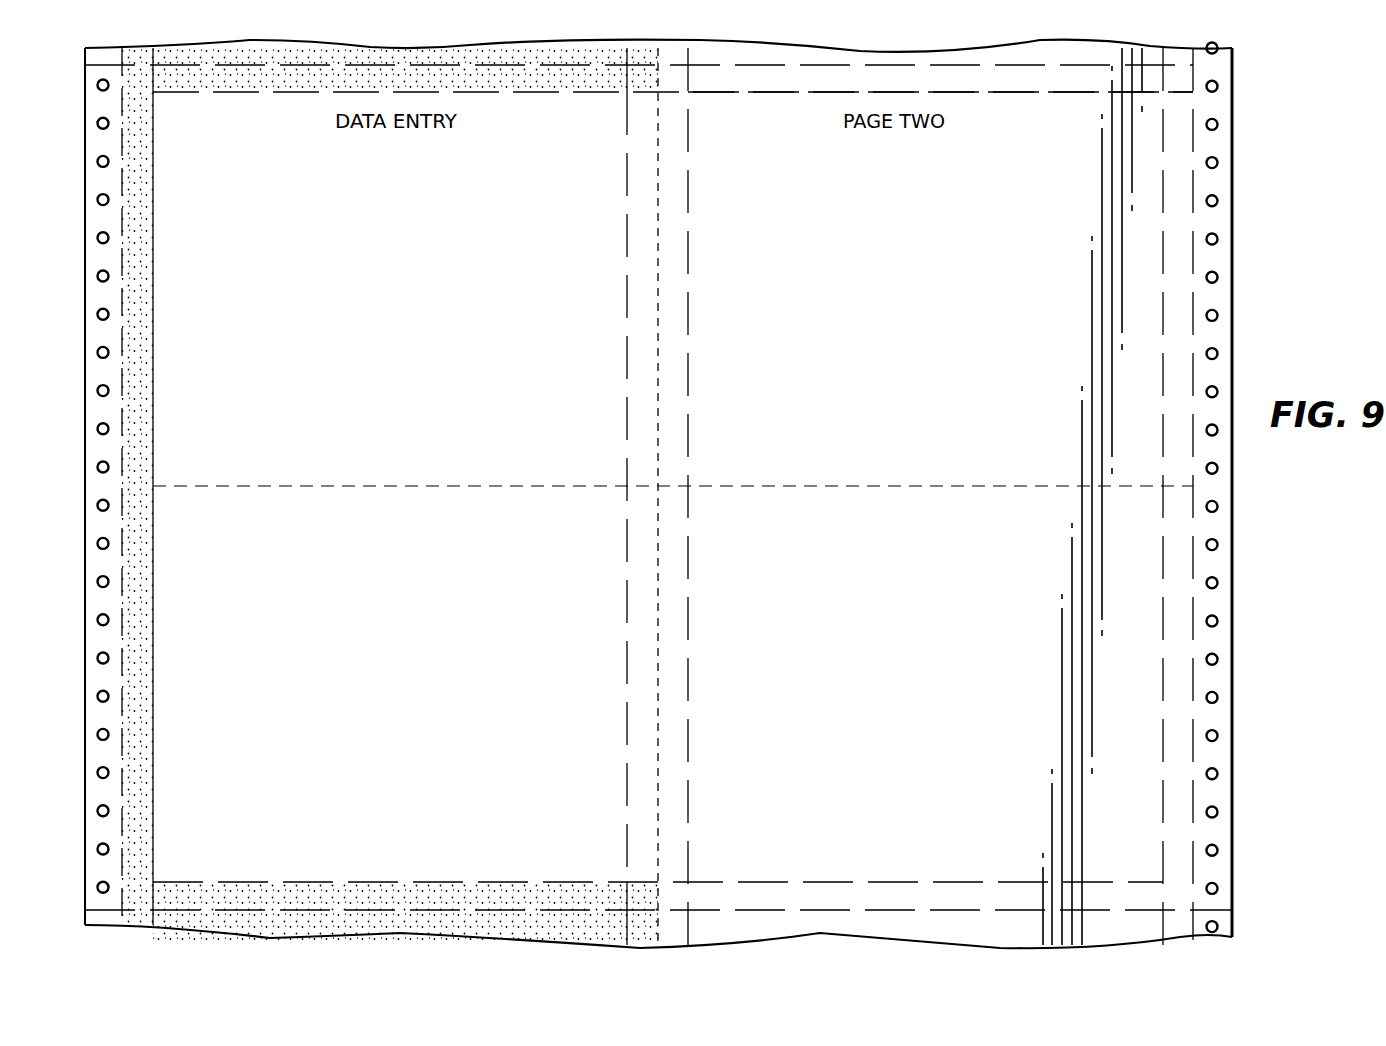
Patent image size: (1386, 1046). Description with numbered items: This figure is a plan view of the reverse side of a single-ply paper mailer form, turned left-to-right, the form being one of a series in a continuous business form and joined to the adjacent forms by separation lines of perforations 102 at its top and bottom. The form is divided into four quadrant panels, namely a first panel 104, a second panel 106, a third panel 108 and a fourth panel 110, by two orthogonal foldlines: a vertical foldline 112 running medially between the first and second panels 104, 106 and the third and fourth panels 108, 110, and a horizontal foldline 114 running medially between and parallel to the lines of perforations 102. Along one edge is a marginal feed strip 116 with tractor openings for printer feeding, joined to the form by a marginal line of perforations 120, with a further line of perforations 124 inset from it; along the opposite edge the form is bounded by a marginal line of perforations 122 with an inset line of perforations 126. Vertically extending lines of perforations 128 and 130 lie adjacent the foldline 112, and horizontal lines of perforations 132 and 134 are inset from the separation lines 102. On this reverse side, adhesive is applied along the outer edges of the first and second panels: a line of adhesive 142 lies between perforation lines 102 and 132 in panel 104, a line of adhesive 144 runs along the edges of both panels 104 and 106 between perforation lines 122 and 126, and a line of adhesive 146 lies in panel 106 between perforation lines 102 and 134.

The lines of perforations 102 is at (1010, 68).
The first panel 104 is at (401, 291).
The second panel 106 is at (399, 676).
The third panel 108 is at (904, 676).
The fourth panel 110 is at (912, 244).
The foldline 112 is at (657, 438).
The foldline 114 is at (438, 488).
The marginal feed strip 116 is at (1220, 213).
The marginal line of perforations 120 is at (1193, 296).
The marginal line of perforations 122 is at (122, 252).
The line of perforations 124 is at (1163, 211).
The line of perforations 126 is at (153, 170).
The vertically extending line of perforations 128 is at (688, 197).
The vertically extending line of perforations 130 is at (627, 290).
The horizontal line of perforations 132 is at (724, 92).
The horizontal line of perforations 134 is at (505, 880).
The line of adhesive 142 is at (233, 73).
The line of adhesive 144 is at (137, 345).
The line of adhesive 146 is at (375, 895).